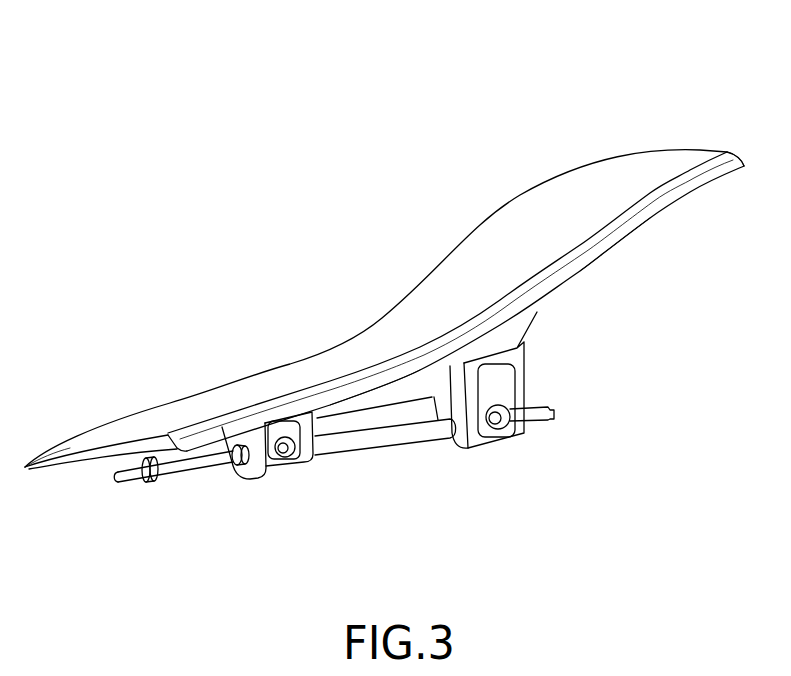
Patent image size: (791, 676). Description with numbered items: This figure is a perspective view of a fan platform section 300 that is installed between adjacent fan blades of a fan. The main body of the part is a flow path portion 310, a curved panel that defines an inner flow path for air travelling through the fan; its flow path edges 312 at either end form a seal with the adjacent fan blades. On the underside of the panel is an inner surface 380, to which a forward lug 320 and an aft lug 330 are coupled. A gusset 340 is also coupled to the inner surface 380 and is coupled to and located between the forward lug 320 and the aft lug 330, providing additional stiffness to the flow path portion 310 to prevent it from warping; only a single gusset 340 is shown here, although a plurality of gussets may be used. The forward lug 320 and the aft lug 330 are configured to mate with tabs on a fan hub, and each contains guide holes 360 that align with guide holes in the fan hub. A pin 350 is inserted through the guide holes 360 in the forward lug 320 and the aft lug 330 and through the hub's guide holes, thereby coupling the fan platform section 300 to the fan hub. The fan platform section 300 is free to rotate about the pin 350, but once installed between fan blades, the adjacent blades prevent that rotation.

The fan platform section 300 is at (338, 134).
The flow path portion 310 is at (507, 240).
The flow path edges 312 is at (194, 398).
The forward lug 320 is at (250, 477).
The aft lug 330 is at (524, 433).
The gusset 340 is at (420, 388).
The pin 350 is at (382, 460).
The guide holes 360 is at (292, 468).
The inner surface 380 is at (615, 254).